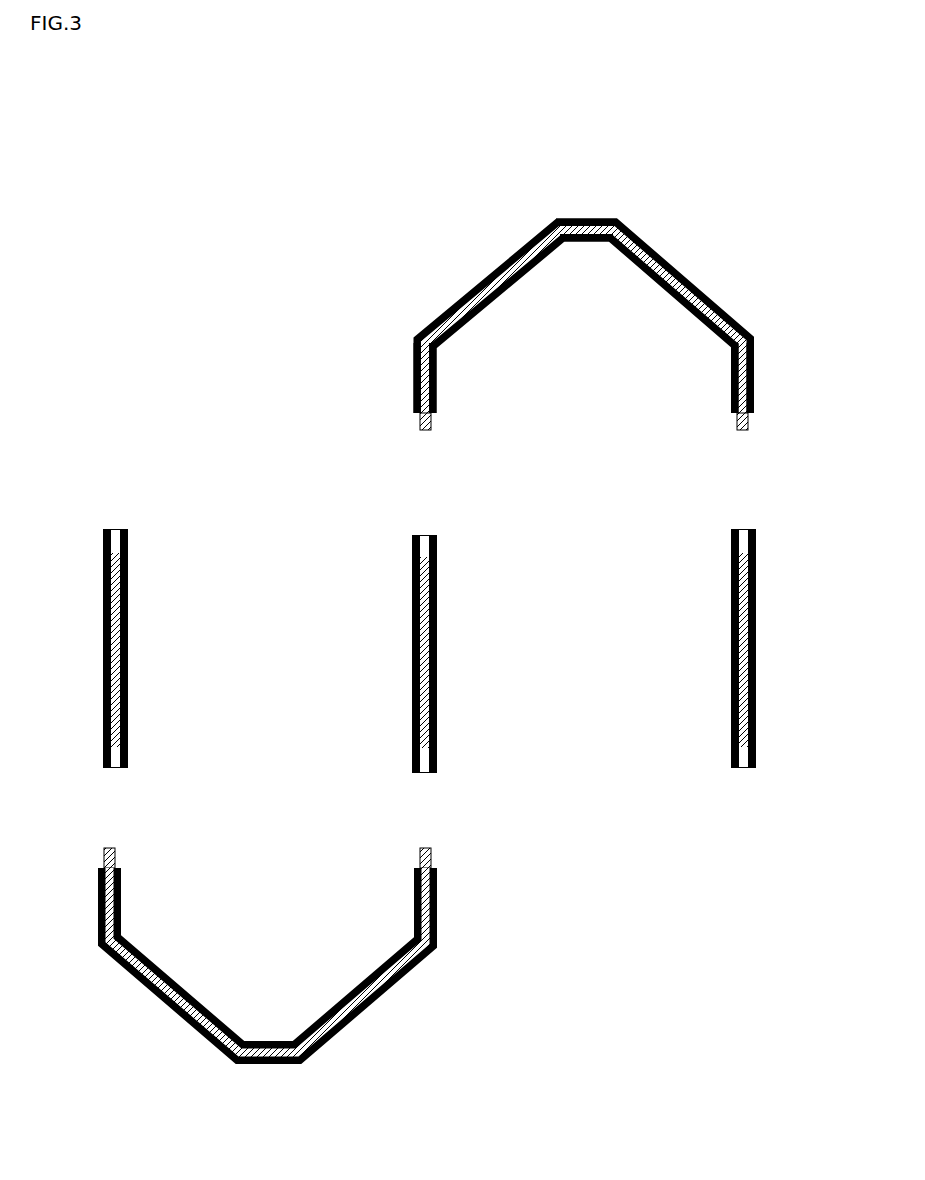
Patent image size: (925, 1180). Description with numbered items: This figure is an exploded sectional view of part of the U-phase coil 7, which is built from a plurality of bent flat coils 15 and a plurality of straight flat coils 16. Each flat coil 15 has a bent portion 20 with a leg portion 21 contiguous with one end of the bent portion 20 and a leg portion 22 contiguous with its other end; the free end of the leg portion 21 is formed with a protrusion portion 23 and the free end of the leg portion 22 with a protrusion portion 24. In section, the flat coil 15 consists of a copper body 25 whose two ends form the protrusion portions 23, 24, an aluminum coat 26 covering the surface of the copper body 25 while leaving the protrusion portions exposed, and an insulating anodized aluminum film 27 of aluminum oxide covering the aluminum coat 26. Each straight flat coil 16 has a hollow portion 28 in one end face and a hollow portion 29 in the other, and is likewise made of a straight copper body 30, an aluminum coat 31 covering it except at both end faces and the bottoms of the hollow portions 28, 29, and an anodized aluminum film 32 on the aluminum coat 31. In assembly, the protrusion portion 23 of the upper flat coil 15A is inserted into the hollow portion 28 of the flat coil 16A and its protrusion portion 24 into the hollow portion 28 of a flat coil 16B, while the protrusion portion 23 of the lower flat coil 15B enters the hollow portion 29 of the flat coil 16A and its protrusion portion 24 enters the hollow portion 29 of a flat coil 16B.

The U-phase coil 7 is at (200, 296).
The flat coil 15 is at (428, 212).
The flat coil 15A is at (490, 238).
The flat coil 15B is at (441, 990).
The flat coil 16 is at (103, 656).
The flat coil 16A is at (412, 691).
The flat coil 16B is at (103, 680).
The bent portion 20 is at (652, 252).
The leg portion 21 is at (413, 366).
The leg portion 22 is at (755, 373).
The protrusion portion 23 is at (420, 426).
The protrusion portion 24 is at (749, 423).
The copper body 25 is at (615, 236).
The aluminum coat 26 is at (579, 222).
The anodized aluminum film 27 is at (700, 292).
The hollow portion 28 is at (116, 540).
The hollow portion 29 is at (116, 760).
The copper body 30 is at (113, 588).
The aluminum coat 31 is at (124, 628).
The anodized aluminum film 32 is at (129, 656).